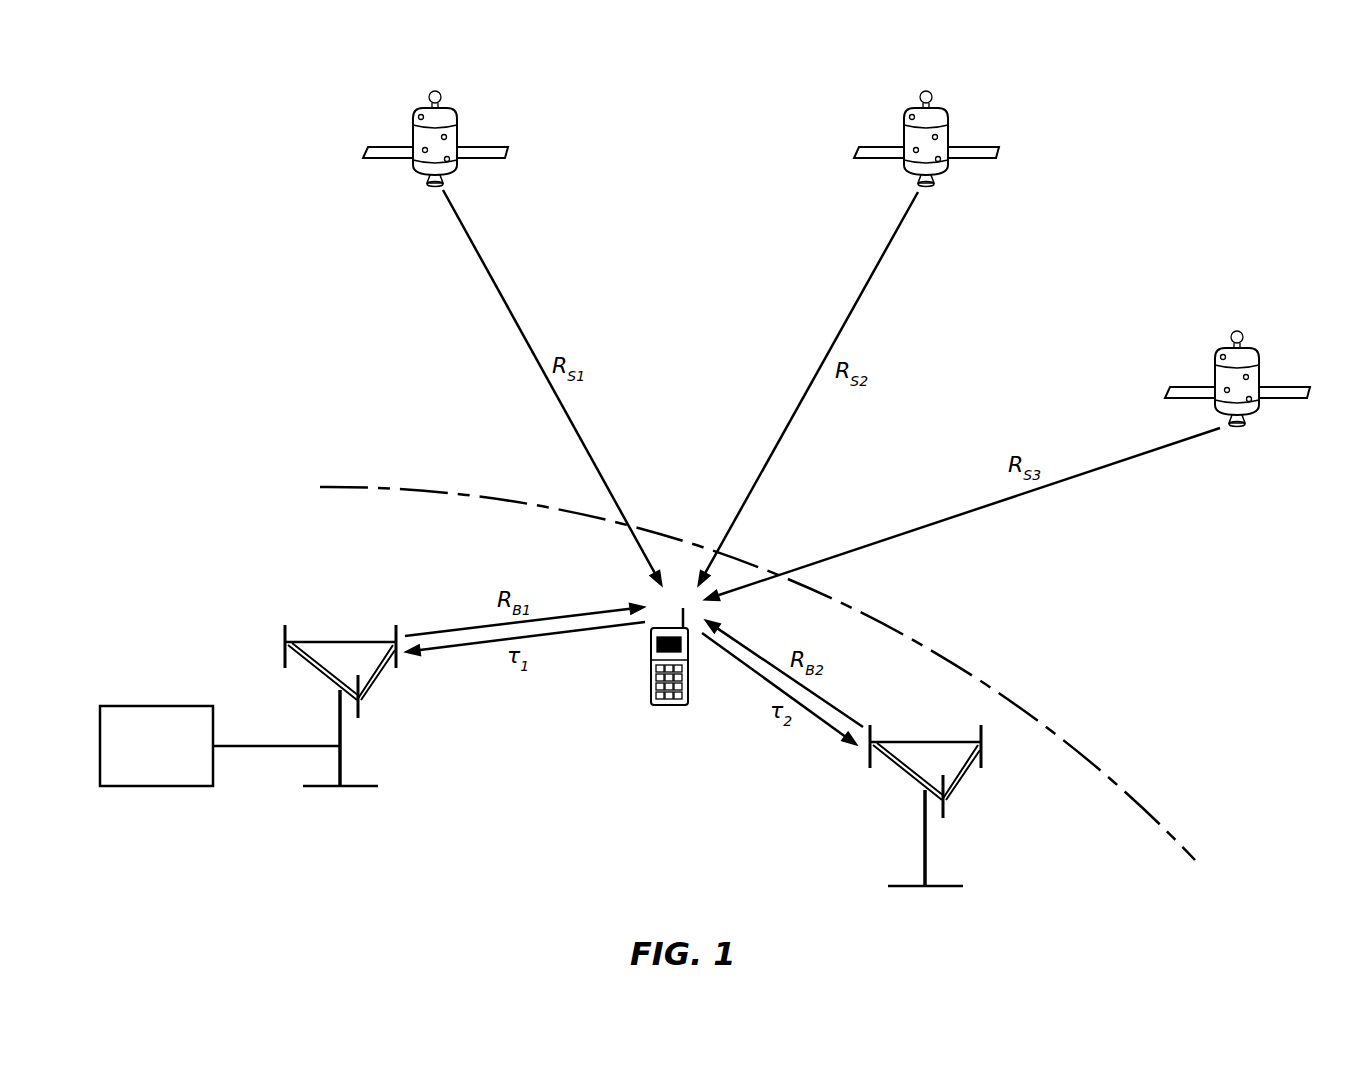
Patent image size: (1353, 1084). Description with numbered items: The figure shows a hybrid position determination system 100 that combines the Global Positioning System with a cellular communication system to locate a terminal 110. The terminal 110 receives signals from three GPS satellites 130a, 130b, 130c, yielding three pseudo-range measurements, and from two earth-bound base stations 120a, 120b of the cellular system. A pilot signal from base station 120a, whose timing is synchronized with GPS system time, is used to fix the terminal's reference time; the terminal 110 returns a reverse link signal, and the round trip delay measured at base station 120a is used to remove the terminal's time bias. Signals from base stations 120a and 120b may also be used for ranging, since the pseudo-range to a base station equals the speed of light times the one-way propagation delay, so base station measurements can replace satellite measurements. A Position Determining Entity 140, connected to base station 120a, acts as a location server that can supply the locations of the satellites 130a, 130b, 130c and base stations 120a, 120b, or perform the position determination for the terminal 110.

The hybrid position determination system 100 is at (204, 100).
The terminal 110 is at (651, 686).
The base station 120a is at (350, 625).
The base station 120b is at (935, 725).
The GPS satellite 130a is at (498, 135).
The GPS satellite 130b is at (974, 150).
The GPS satellite 130c is at (1285, 390).
The Position Determining Entity (PDE) 140 is at (148, 706).